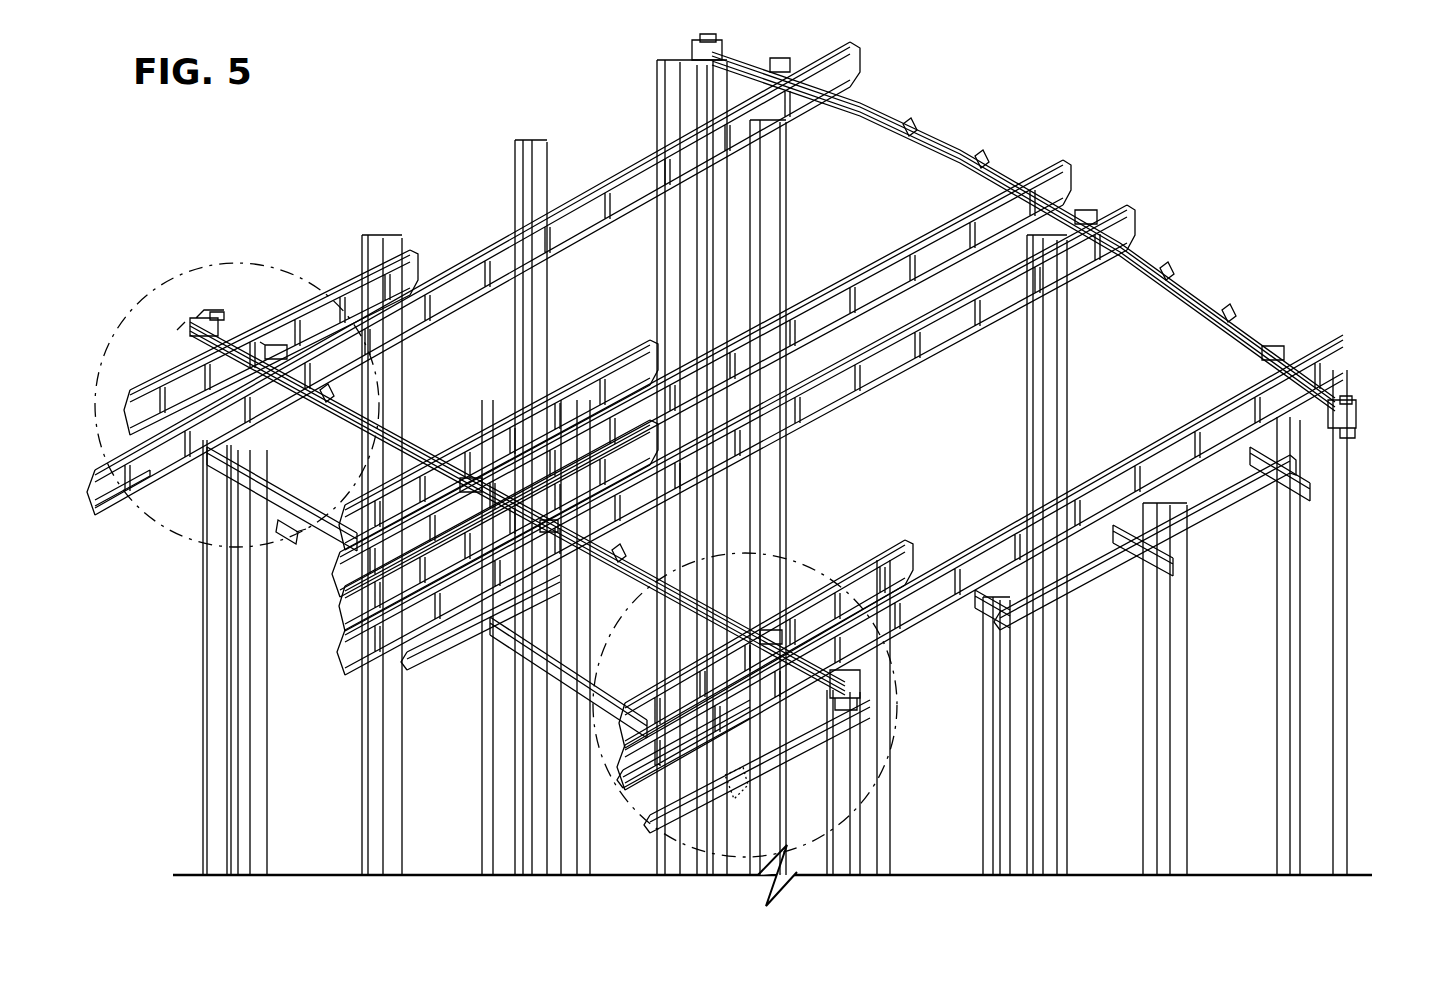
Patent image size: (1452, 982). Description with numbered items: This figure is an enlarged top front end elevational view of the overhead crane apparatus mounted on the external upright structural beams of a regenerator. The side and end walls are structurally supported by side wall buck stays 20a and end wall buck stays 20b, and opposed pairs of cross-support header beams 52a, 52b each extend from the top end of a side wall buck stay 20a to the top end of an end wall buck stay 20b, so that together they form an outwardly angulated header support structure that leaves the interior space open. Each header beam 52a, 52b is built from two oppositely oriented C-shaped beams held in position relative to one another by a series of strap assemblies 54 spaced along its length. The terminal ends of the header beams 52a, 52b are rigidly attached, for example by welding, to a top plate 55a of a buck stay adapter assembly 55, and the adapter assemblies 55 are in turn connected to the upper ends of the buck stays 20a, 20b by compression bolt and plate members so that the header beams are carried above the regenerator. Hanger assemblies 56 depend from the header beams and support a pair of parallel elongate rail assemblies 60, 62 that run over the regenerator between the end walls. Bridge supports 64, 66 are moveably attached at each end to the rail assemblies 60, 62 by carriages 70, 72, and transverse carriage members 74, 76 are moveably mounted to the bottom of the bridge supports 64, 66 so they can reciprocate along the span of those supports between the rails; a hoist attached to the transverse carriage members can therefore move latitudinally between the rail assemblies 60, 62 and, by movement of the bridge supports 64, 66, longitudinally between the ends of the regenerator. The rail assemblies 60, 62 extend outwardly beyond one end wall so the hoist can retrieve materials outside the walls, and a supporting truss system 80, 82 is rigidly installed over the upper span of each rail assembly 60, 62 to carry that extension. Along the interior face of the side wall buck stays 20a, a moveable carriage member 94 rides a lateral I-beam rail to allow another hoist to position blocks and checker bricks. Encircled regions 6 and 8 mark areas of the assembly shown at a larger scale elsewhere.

The detail region 6 is at (635, 870).
The detail region 8 is at (233, 265).
The side wall buck stay 20a is at (702, 105).
The end wall buck stay 20b is at (770, 180).
The cross-support header beam 52a is at (620, 588).
The cross-support header beam 52b is at (368, 476).
The strap assembly 54 is at (320, 395).
The buck stay adapter assembly 55 is at (682, 55).
The top plate 55a is at (1349, 397).
The hanger assembly 56 is at (280, 338).
The rail assembly 60 is at (1000, 525).
The rail assembly 62 is at (480, 262).
The bridge support 64 is at (565, 672).
The bridge support 66 is at (227, 500).
The carriage 70 is at (450, 650).
The carriage 72 is at (176, 492).
The transverse carriage member 74 is at (590, 715).
The transverse carriage member 76 is at (300, 545).
The supporting truss system 80 is at (625, 440).
The supporting truss system 82 is at (370, 250).
The moveable carriage member 94 is at (737, 787).